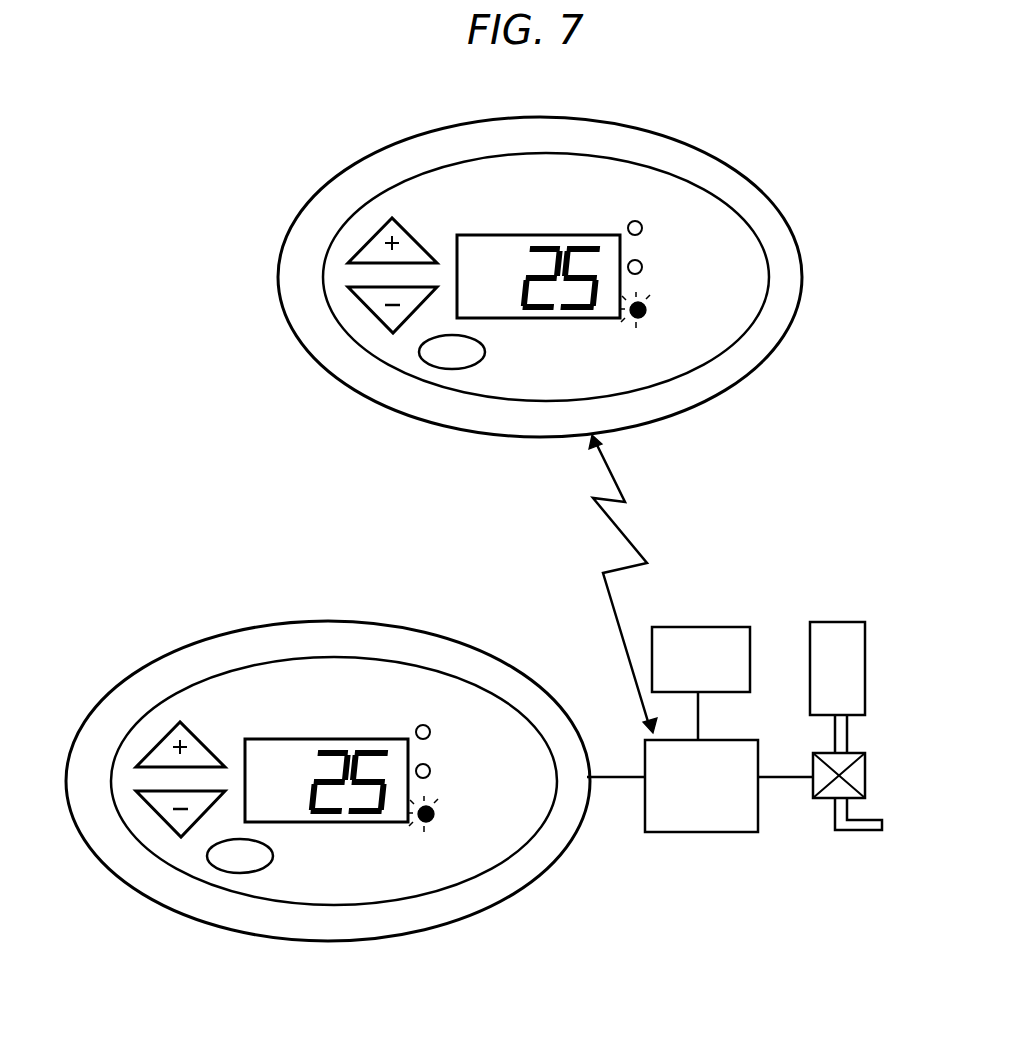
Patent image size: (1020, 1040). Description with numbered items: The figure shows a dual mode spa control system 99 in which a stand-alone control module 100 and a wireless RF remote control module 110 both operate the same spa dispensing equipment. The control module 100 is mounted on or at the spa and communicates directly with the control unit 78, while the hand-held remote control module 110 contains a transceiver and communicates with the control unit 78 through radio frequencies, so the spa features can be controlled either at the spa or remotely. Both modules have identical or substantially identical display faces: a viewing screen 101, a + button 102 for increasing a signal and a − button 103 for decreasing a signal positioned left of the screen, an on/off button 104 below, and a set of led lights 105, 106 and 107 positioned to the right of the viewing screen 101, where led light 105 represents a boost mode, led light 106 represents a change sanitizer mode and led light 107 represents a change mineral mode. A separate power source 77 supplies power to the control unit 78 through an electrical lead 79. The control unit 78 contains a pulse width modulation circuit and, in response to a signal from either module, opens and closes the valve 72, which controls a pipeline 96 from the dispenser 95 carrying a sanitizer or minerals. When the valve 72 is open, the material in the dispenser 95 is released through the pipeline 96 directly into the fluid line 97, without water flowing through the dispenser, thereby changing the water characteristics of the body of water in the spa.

The remote control module 110 is at (568, 118).
The control module 100 is at (328, 739).
The viewing screen 101 is at (495, 262).
The + button 102 is at (393, 245).
The − button 103 is at (385, 310).
The on/off button 104 is at (448, 368).
The led light 105 is at (641, 223).
The led light 106 is at (641, 262).
The led light 107 is at (646, 318).
The dual mode spa control system 99 is at (796, 482).
The power source 77 is at (690, 627).
The electrical lead 79 is at (698, 716).
The control unit 78 is at (665, 832).
The dispenser 95 is at (865, 660).
The pipeline 96 is at (848, 735).
The valve 72 is at (865, 768).
The fluid line 97 is at (858, 830).